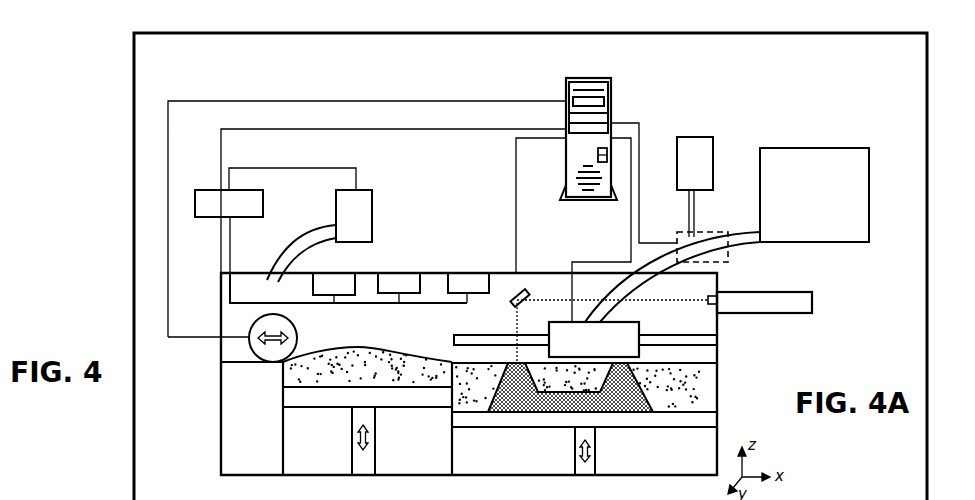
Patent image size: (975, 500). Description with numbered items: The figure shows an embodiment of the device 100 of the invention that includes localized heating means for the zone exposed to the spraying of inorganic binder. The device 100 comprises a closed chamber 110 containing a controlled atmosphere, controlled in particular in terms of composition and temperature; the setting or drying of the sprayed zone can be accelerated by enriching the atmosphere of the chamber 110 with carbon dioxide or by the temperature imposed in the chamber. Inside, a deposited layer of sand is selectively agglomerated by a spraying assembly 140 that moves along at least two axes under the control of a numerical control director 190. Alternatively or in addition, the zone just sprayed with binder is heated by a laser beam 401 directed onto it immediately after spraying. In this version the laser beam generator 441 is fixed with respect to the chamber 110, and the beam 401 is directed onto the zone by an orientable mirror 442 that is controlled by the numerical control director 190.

The device 100 is at (530, 368).
The closed chamber 110 is at (718, 325).
The spraying assembly 140 is at (563, 322).
The numerical control director 190 is at (611, 102).
The beam 401 is at (680, 300).
The laser beam generator 441 is at (786, 292).
The orientable mirror 442 is at (513, 293).